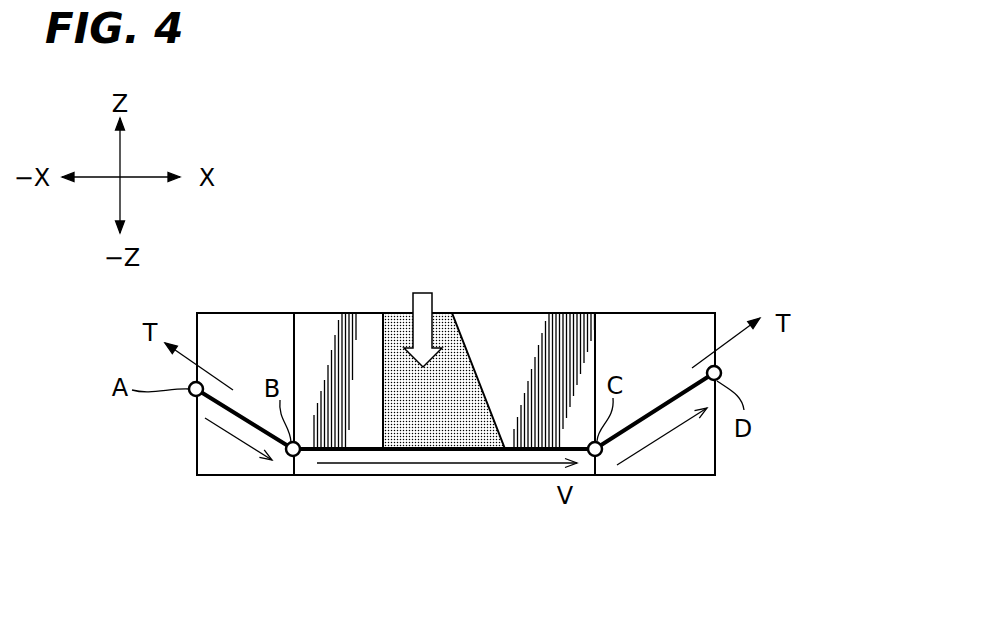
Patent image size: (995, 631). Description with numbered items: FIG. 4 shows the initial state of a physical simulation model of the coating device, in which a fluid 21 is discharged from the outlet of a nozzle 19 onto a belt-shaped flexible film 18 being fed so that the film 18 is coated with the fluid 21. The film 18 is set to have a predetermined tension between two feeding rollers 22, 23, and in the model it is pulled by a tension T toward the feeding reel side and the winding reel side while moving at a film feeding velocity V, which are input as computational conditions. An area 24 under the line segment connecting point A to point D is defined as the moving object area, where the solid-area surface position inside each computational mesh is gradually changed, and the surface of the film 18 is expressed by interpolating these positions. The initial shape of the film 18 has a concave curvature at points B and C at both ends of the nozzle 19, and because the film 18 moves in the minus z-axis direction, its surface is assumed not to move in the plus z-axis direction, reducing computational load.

The film 18 is at (668, 407).
The nozzle 19 is at (313, 358).
The fluid 21 is at (440, 328).
The feeding roller 22 is at (293, 457).
The feeding roller 23 is at (597, 457).
The area 24 is at (497, 467).